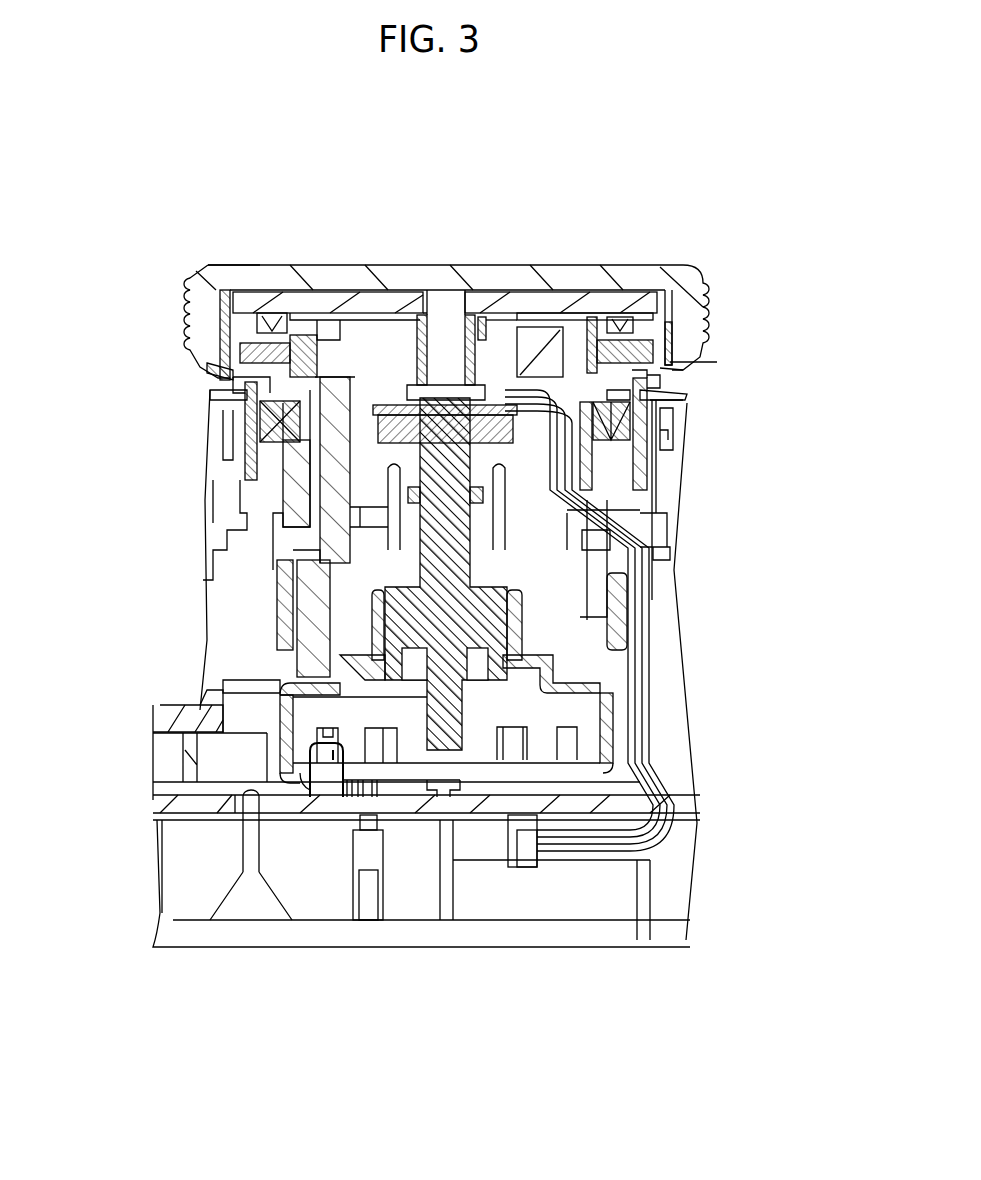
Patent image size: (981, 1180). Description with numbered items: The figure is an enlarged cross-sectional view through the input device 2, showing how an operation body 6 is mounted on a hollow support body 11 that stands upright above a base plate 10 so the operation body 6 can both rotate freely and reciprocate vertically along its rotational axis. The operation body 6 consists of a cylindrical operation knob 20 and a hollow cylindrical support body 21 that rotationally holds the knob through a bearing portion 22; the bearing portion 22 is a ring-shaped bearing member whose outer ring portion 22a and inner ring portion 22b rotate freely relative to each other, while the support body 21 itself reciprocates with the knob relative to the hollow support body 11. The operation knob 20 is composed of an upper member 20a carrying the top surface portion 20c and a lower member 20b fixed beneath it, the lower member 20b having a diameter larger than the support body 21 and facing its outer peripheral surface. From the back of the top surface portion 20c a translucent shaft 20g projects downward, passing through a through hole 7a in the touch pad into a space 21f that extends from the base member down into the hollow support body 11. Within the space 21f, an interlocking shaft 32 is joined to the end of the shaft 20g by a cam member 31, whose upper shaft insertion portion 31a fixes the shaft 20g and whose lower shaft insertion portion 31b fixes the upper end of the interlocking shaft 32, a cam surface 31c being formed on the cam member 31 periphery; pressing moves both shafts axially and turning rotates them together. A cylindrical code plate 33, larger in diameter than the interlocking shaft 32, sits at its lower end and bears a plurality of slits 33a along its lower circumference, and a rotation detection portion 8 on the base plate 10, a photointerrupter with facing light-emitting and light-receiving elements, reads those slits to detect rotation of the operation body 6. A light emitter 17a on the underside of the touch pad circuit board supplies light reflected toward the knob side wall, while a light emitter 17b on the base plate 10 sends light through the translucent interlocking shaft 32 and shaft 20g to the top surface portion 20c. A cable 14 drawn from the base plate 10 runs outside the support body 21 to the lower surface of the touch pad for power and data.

The input device 2 is at (706, 232).
The operation body 6 is at (36, 297).
The through hole 7a is at (457, 285).
The rotation detection portion 8 is at (300, 792).
The base plate 10 is at (380, 797).
The hollow support body 11 is at (330, 467).
The cable 14 is at (597, 503).
The light emitter 17a is at (268, 330).
The light emitter 17b is at (458, 800).
The operation knob 20 is at (78, 270).
The upper member 20a is at (186, 320).
The lower member 20b is at (212, 370).
The top surface portion 20c is at (238, 265).
The shaft 20g is at (440, 360).
The support body 21 is at (243, 383).
The space 21f is at (362, 358).
The bearing portion 22 is at (94, 390).
The outer ring portion 22a is at (232, 403).
The inner ring portion 22b is at (255, 430).
The cam member 31 is at (790, 353).
The upper shaft insertion portion 31a is at (660, 370).
The lower shaft insertion portion 31b is at (660, 407).
The cam surface 31c is at (613, 430).
The interlocking shaft 32 is at (397, 580).
The code plate 33 is at (290, 702).
The slit 33a is at (380, 745).